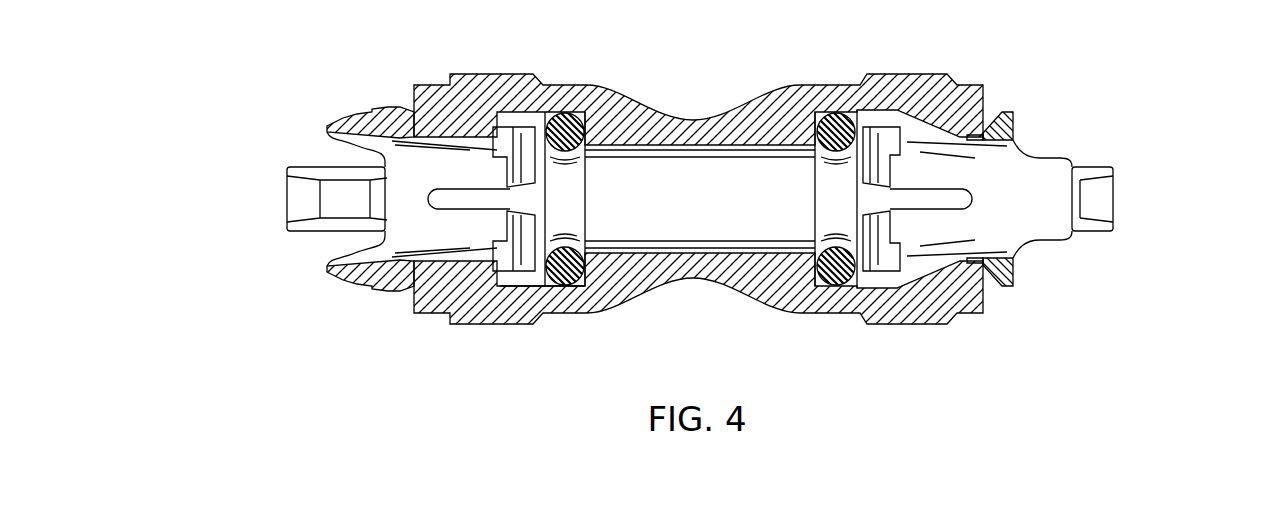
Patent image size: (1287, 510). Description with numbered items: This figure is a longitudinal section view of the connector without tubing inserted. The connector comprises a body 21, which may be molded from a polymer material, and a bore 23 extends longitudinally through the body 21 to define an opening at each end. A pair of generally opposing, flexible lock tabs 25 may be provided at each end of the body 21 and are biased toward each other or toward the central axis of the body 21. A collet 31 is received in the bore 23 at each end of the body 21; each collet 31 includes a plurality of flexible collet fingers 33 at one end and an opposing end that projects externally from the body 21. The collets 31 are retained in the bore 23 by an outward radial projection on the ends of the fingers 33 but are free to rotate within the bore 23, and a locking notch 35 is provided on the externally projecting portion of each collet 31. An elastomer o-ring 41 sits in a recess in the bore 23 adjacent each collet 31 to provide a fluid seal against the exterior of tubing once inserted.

The body 21 is at (910, 73).
The bore 23 is at (737, 168).
The lock tabs 25 is at (297, 193).
The collet 31 is at (378, 107).
The collet fingers 33 is at (508, 125).
The locking notch 35 is at (353, 237).
The o-ring 41 is at (577, 272).